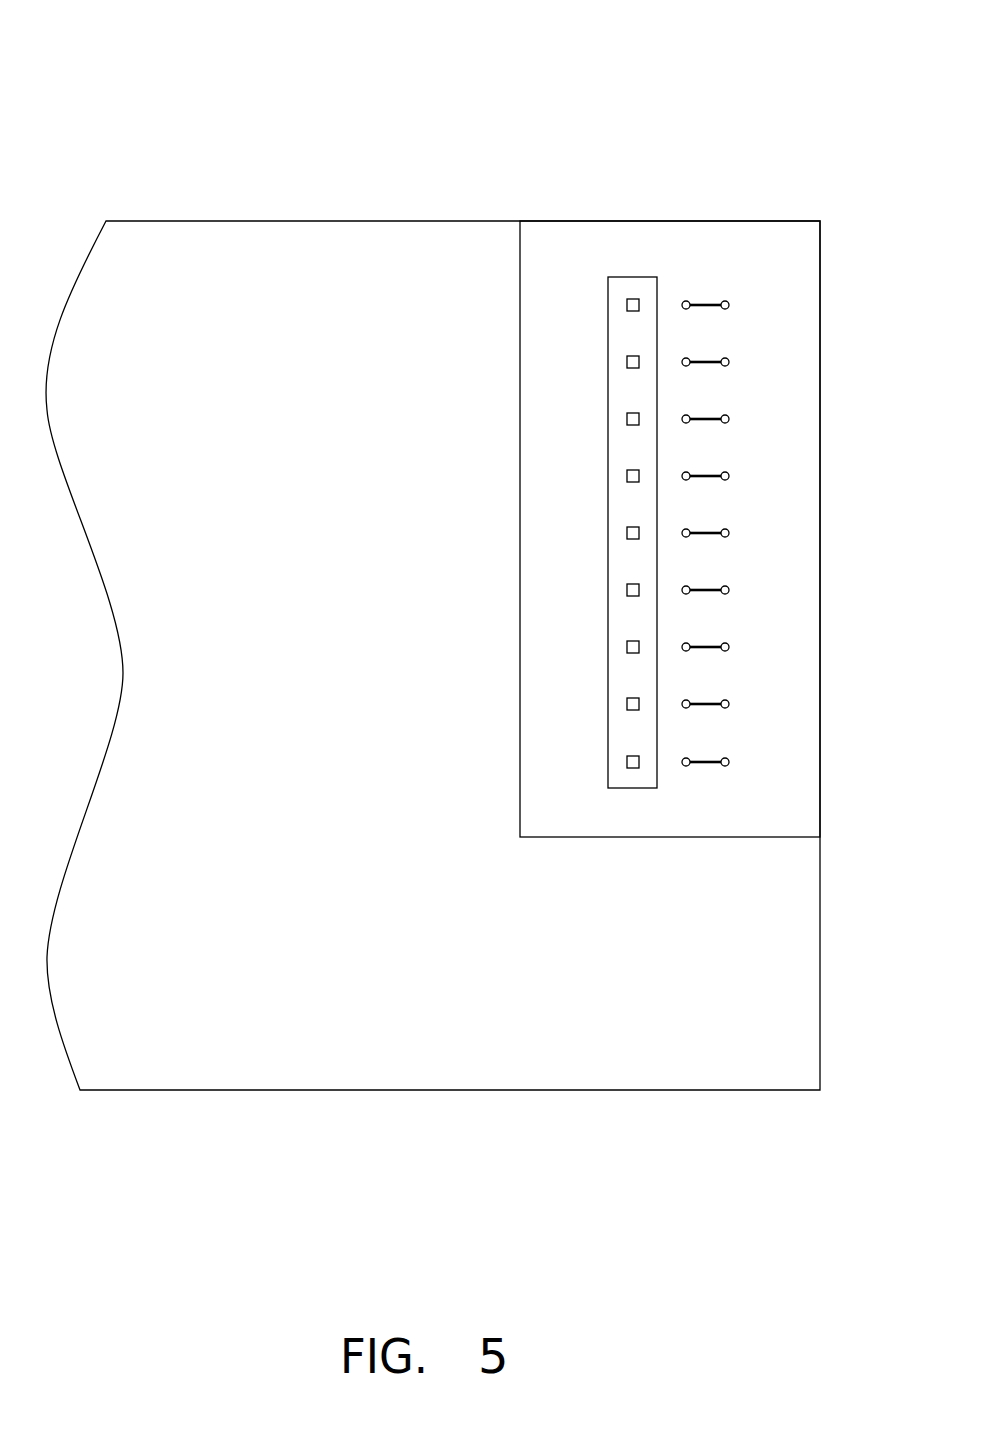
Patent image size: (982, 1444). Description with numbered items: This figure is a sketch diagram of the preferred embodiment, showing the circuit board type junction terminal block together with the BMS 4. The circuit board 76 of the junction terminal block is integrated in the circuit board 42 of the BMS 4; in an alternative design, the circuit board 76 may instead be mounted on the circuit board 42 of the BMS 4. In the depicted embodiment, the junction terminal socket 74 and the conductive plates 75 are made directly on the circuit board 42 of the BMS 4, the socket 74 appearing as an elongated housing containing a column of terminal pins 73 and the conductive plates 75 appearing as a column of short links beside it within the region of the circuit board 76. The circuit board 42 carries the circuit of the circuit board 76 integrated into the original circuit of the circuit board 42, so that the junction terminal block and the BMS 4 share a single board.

The BMS 4 is at (465, 618).
The circuit board 42 is at (288, 1047).
The pin 73 is at (627, 303).
The junction terminal socket 74 is at (658, 292).
The conductive plates 75 is at (708, 303).
The circuit board 76 is at (763, 322).